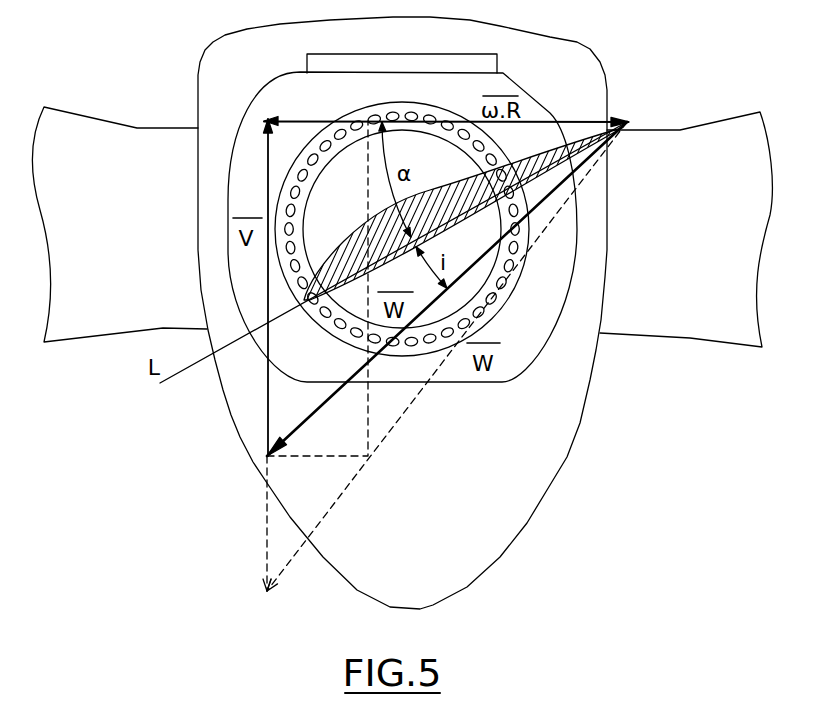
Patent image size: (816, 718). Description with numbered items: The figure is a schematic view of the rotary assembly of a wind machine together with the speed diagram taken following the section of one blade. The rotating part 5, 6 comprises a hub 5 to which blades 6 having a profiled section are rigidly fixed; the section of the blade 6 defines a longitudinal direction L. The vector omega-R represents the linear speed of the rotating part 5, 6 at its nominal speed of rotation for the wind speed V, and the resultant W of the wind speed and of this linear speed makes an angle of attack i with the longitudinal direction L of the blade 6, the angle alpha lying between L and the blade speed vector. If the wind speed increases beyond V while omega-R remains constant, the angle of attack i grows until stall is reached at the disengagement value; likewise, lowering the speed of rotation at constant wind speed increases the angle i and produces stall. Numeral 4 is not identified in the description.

The hub 5 is at (313, 138).
The blade 6 is at (84, 127).
The velocity component V4 4 is at (262, 505).